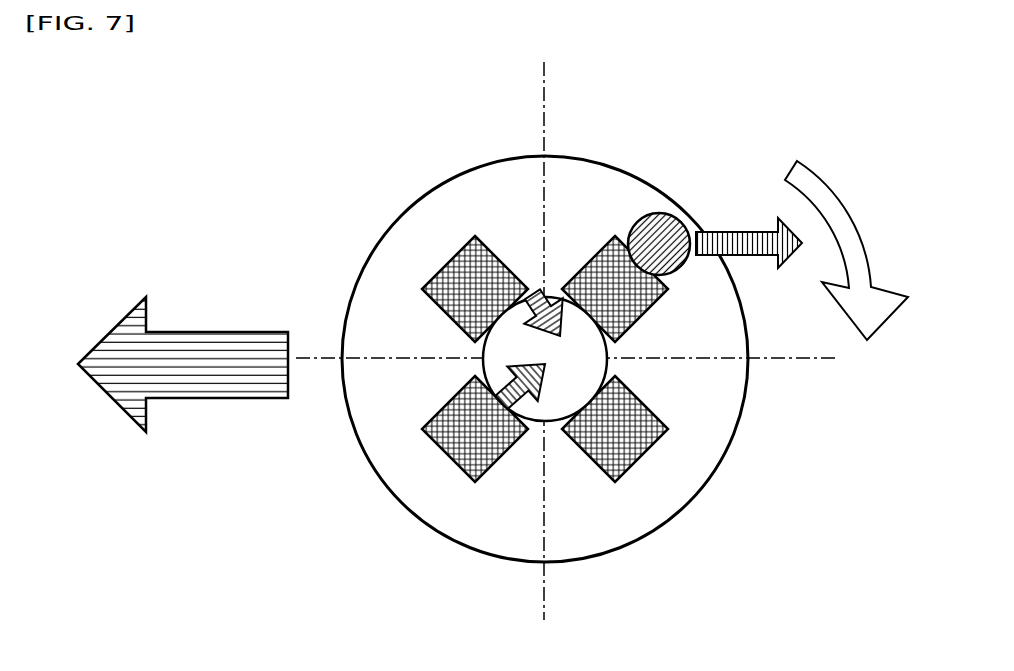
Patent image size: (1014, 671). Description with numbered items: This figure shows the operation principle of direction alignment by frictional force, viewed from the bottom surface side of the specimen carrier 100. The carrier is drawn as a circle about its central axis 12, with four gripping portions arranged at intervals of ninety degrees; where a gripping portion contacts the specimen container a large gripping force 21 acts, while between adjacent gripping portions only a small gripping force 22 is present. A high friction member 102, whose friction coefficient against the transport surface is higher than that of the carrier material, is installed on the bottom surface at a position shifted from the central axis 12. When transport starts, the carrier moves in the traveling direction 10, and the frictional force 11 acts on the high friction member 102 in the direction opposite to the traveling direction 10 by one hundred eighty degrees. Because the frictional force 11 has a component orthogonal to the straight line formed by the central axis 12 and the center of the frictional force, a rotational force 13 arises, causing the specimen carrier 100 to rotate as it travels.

The specimen carrier 100 is at (395, 218).
The central axis 12 is at (543, 357).
The small gripping force 22 is at (550, 297).
The large gripping force 21 is at (522, 400).
The high friction member 102 is at (680, 212).
The frictional force 11 is at (760, 257).
The rotational force 13 is at (825, 180).
The traveling direction 10 is at (193, 398).